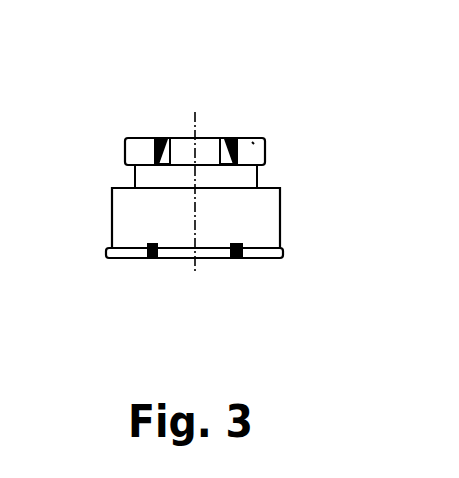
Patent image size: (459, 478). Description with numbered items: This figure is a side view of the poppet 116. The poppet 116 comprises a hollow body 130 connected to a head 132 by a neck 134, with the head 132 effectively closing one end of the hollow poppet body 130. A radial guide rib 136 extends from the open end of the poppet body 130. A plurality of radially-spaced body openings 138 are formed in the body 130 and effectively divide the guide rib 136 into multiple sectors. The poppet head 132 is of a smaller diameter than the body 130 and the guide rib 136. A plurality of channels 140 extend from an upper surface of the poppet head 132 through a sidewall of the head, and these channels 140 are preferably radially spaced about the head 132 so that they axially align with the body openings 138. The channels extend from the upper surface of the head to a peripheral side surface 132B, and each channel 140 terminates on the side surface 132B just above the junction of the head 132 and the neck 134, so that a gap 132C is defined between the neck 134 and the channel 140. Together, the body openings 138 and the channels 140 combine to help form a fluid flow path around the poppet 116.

The poppet 116 is at (208, 82).
The hollow body 130 is at (289, 222).
The head 132 is at (272, 145).
The peripheral side surface 132B is at (253, 143).
The gap 132C is at (161, 166).
The neck 134 is at (266, 178).
The radial guide rib 136 is at (122, 258).
The body openings 138 is at (152, 258).
The channels 140 is at (162, 139).